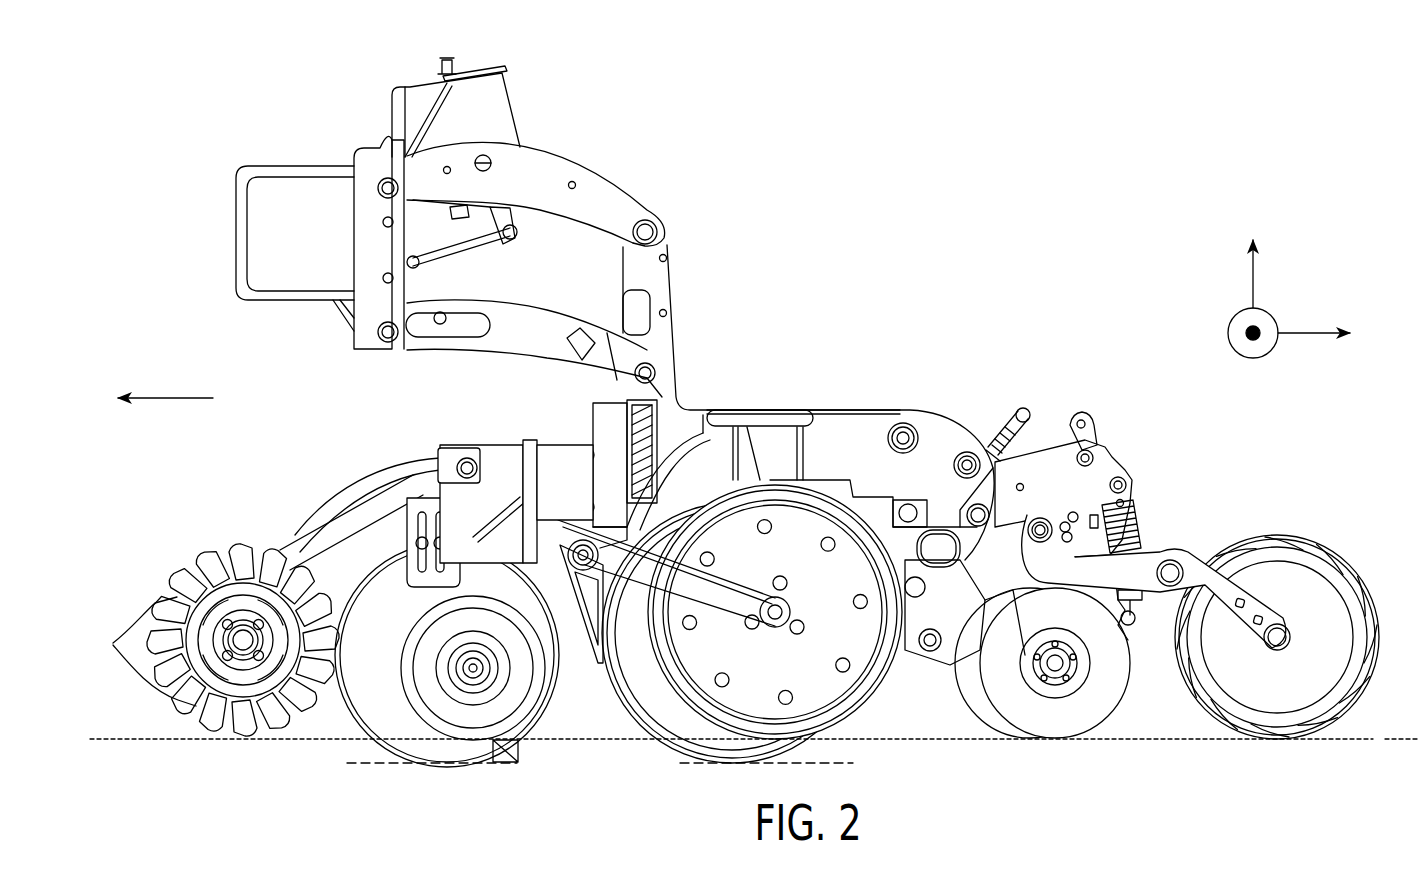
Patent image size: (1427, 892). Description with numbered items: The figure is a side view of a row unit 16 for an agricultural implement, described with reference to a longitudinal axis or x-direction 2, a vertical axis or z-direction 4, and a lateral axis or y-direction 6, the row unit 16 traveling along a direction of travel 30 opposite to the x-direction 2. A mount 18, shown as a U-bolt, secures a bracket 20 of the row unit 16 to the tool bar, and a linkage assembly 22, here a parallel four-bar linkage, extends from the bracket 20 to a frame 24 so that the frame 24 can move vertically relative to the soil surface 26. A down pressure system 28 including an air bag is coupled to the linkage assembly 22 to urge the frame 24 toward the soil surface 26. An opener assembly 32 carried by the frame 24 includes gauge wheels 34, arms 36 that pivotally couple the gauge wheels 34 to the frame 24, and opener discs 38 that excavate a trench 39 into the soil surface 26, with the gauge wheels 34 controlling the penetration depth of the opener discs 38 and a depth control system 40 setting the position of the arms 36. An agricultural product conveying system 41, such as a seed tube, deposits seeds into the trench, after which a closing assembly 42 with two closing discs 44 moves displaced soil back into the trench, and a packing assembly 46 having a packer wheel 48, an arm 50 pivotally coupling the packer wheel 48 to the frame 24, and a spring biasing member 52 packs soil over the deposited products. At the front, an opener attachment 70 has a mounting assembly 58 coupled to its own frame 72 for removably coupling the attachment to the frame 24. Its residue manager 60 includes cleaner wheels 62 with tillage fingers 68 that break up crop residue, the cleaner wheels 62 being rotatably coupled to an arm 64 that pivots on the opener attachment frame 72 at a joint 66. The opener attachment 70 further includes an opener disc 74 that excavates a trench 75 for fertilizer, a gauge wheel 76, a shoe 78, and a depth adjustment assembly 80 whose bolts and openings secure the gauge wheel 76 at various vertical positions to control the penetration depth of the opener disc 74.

The longitudinal axis or x-direction 2 is at (1297, 333).
The vertical axis or z-direction 4 is at (1237, 353).
The lateral axis or y-direction 6 is at (1252, 290).
The row unit 16 is at (872, 171).
The mount 18 is at (243, 169).
The bracket 20 is at (370, 152).
The linkage assembly 22 is at (560, 157).
The frame 24 is at (847, 435).
The soil surface 26 is at (1350, 738).
The down pressure system 28 is at (483, 68).
The direction of travel 30 is at (166, 399).
The opener assembly 32 is at (667, 763).
The gauge wheels 34 is at (840, 637).
The arms 36 is at (720, 597).
The opener discs 38 is at (663, 717).
The trench 39 is at (697, 763).
The depth control system 40 is at (1023, 412).
The agricultural product conveying system 41 is at (762, 393).
The closing assembly 42 is at (1045, 745).
The closing discs 44 is at (1013, 687).
The packing assembly 46 is at (1307, 753).
The packer wheel 48 is at (1347, 580).
The arm 50 is at (1202, 582).
The biasing member 52 is at (1140, 527).
The mounting assembly 58 is at (532, 437).
The residue manager 60 is at (207, 762).
The cleaner wheels 62 is at (197, 587).
The arm 64 is at (348, 480).
The joint 66 is at (457, 462).
The tillage points or fingers 68 is at (113, 644).
The opener attachment 70 is at (312, 387).
The opener attachment frame 72 is at (480, 510).
The opener disc 74 is at (402, 703).
The trench 75 is at (358, 767).
The gauge wheel 76 is at (467, 703).
The shoe 78 is at (518, 762).
The depth adjustment assembly 80 is at (405, 513).